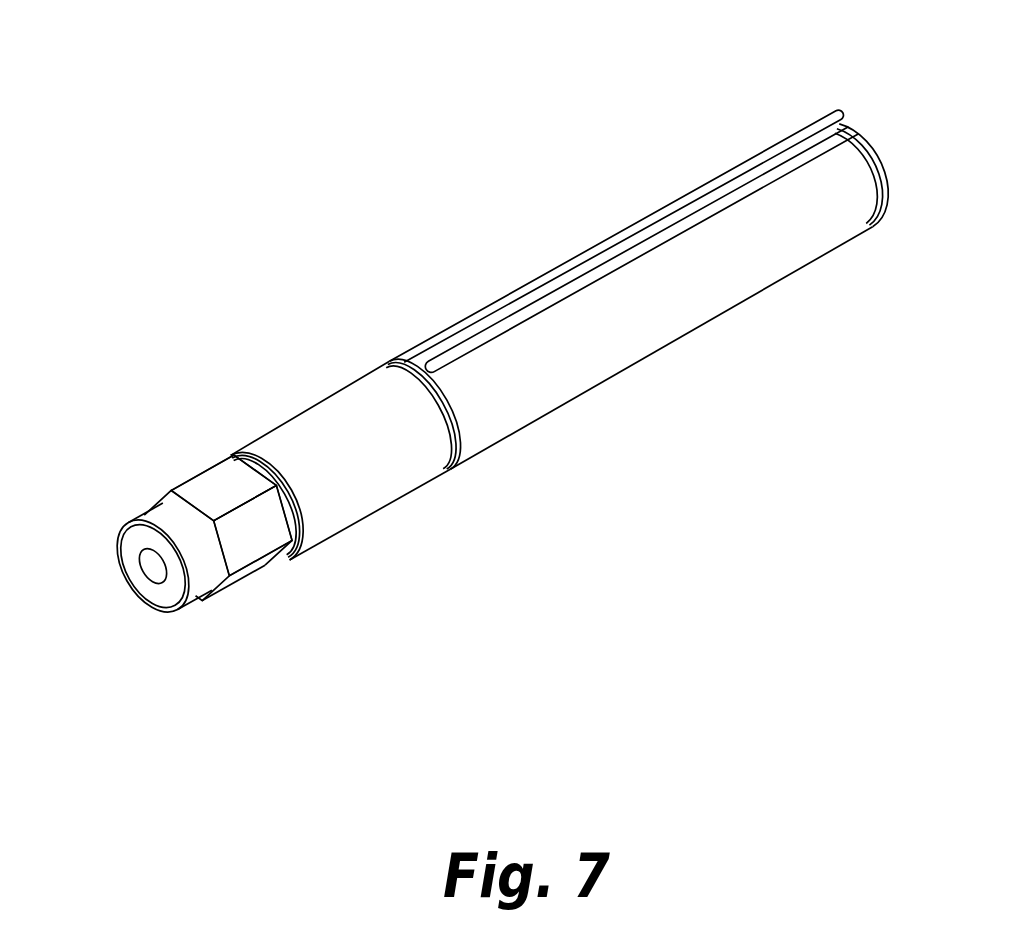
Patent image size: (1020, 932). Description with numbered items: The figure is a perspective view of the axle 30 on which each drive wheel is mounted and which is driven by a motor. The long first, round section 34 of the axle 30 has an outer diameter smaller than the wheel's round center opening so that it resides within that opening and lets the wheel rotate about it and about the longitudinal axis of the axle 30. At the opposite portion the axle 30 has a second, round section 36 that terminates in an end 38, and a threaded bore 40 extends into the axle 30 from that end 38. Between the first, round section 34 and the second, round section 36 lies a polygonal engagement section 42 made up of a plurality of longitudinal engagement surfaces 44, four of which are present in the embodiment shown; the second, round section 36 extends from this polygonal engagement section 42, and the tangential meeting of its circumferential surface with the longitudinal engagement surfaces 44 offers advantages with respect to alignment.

The axle 30 is at (502, 322).
The first, round section 34 is at (569, 331).
The second, round section 36 is at (224, 524).
The end 38 is at (157, 563).
The threaded bore 40 is at (153, 566).
The polygonal engagement section 42 is at (224, 524).
The longitudinal engagement surfaces 44 is at (237, 512).